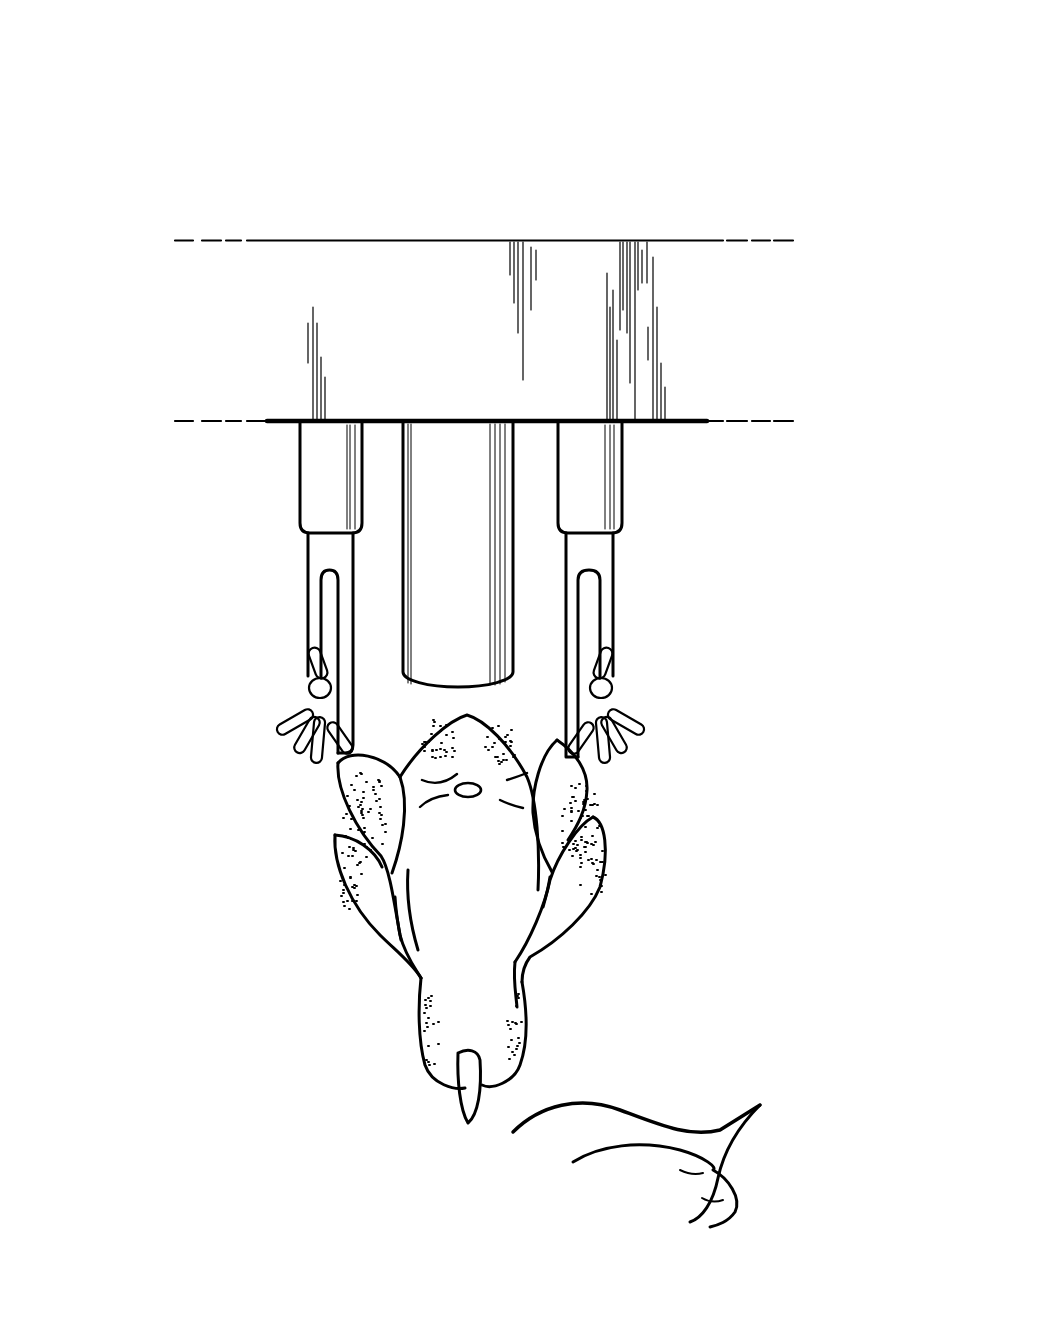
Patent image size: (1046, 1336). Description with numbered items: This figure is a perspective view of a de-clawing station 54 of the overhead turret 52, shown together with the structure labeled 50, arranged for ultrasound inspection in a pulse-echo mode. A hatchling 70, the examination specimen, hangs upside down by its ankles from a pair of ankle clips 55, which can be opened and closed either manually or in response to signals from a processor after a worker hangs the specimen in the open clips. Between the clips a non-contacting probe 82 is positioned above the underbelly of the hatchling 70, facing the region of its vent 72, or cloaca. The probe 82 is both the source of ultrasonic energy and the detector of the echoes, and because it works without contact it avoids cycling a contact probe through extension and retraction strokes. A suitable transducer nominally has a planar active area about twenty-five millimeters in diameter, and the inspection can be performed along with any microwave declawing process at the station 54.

The shackle assembly 50 is at (288, 133).
The de-clawing station 54 is at (420, 589).
The overhead turret 52 is at (297, 240).
The ankle clips 55 is at (317, 571).
The non-contacting probe 82 is at (485, 688).
The vent 72 is at (490, 791).
The hatchling 70 is at (507, 1023).